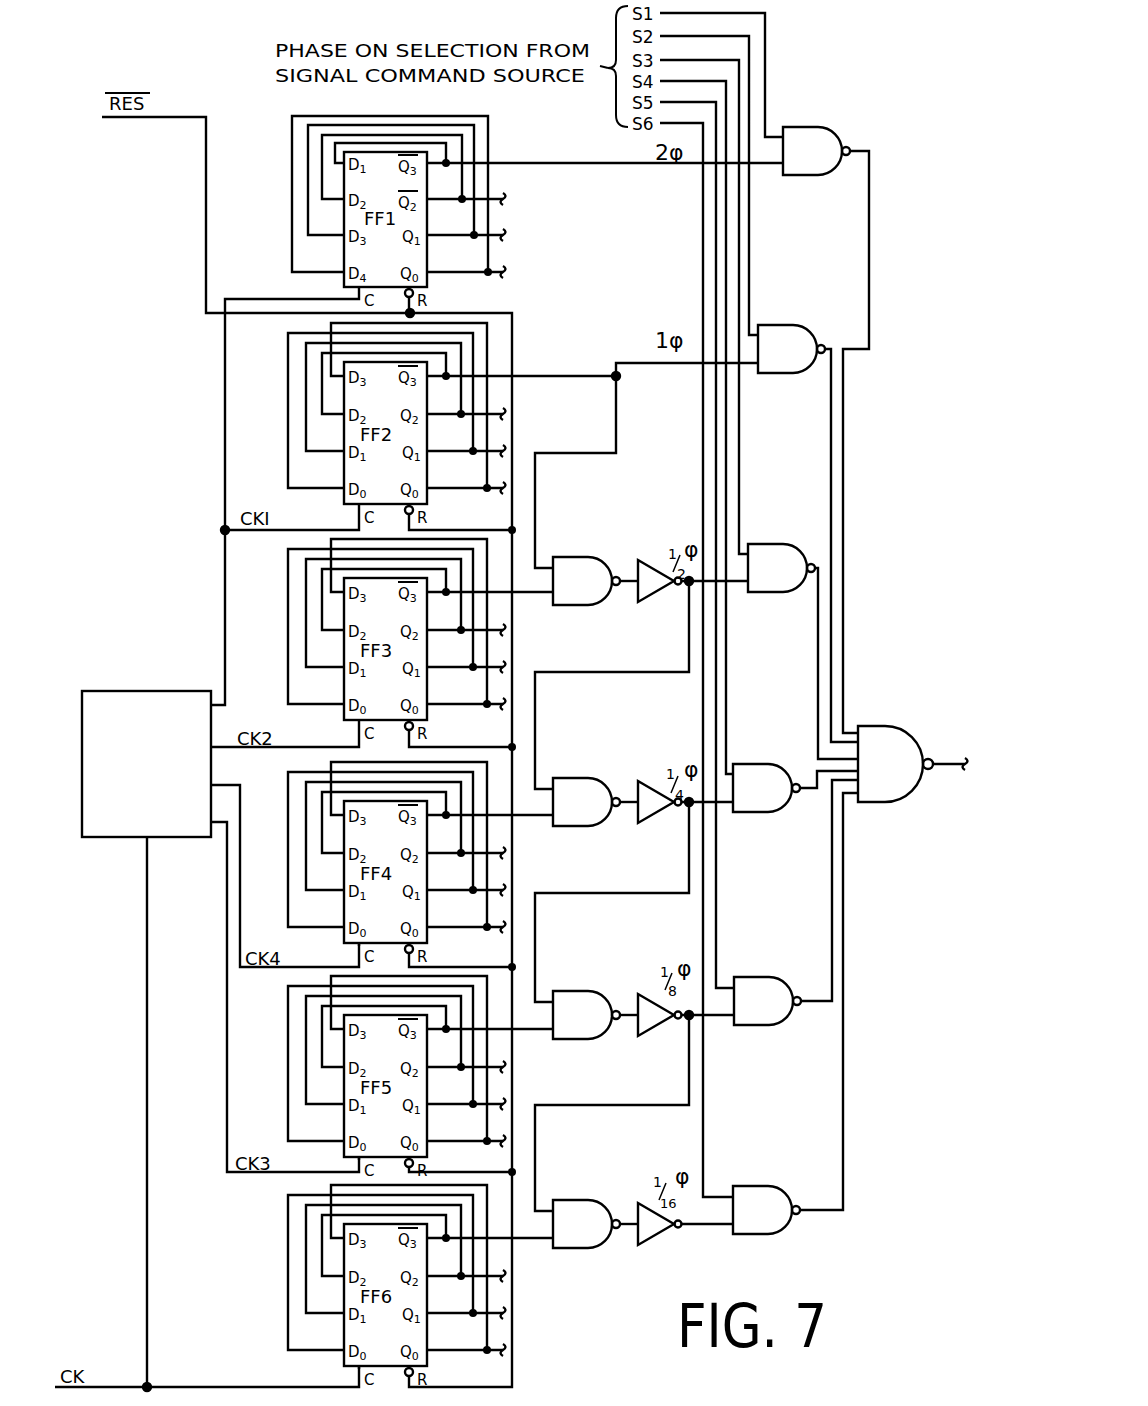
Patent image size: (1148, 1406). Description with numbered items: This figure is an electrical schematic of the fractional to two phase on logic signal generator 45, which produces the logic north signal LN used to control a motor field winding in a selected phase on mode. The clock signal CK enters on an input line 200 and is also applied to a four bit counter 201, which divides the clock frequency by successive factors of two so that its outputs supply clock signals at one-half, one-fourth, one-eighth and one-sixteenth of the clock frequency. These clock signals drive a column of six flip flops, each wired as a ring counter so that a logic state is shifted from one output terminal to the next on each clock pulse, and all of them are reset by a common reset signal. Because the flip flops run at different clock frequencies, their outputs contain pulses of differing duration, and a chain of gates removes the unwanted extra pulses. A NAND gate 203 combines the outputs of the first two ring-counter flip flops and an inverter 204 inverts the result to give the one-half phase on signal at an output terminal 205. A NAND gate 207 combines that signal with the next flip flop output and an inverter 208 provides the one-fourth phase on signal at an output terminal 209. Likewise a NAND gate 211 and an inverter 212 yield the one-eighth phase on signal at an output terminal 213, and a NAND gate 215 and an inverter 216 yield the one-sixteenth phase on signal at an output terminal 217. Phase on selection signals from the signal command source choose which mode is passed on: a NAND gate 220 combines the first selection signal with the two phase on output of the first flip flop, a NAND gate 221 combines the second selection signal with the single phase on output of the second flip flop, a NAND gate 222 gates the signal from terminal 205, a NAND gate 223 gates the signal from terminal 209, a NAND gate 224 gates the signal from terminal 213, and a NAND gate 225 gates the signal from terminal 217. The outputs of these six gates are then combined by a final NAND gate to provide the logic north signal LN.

The fractional to two phase on logic signal generator 45 is at (808, 900).
The input line 200 is at (203, 1385).
The four bit counter 201 is at (166, 691).
The NAND gate 203 is at (577, 560).
The inverter 204 is at (656, 560).
The output terminal 205 is at (678, 585).
The NAND gate 207 is at (570, 778).
The inverter 208 is at (657, 782).
The output terminal 209 is at (683, 808).
The NAND gate 211 is at (590, 991).
The inverter 212 is at (648, 994).
The output terminal 213 is at (680, 1022).
The NAND gate 215 is at (570, 1200).
The inverter 216 is at (650, 1196).
The output terminal 217 is at (681, 1228).
The NAND gate 220 is at (818, 127).
The NAND gate 221 is at (786, 326).
The NAND gate 222 is at (755, 544).
The NAND gate 223 is at (746, 764).
The NAND gate 224 is at (765, 977).
The NAND gate 225 is at (757, 1186).